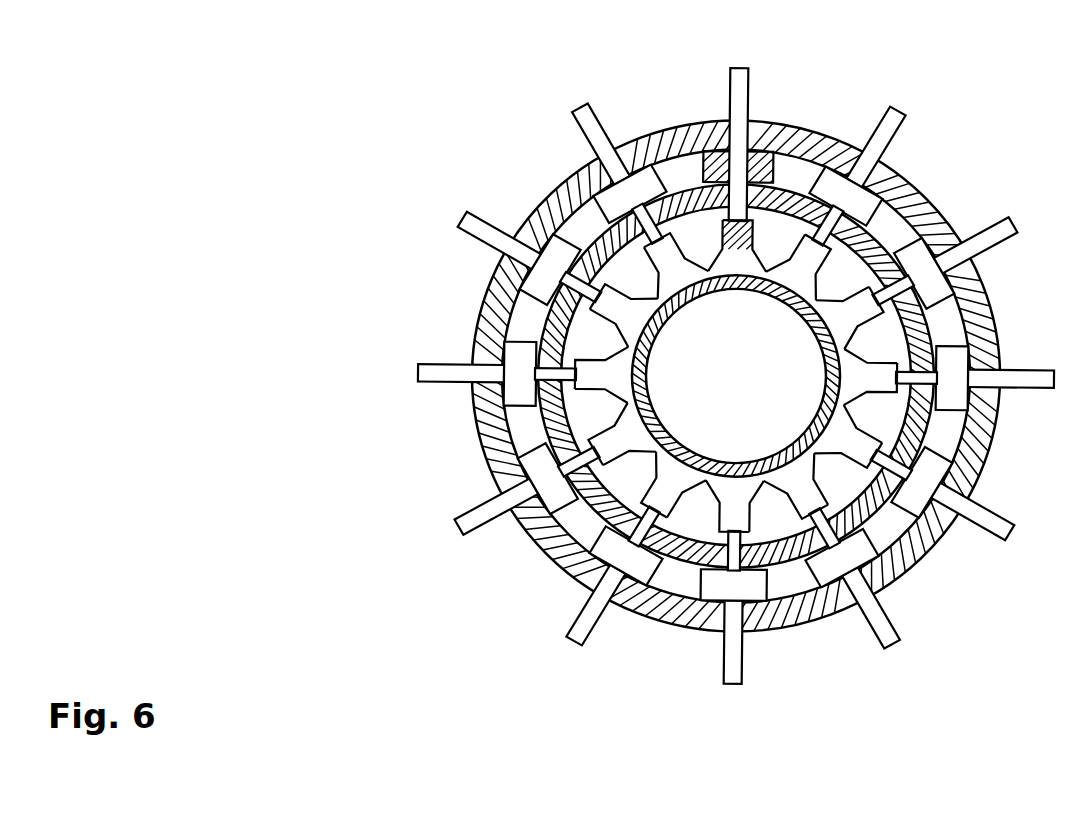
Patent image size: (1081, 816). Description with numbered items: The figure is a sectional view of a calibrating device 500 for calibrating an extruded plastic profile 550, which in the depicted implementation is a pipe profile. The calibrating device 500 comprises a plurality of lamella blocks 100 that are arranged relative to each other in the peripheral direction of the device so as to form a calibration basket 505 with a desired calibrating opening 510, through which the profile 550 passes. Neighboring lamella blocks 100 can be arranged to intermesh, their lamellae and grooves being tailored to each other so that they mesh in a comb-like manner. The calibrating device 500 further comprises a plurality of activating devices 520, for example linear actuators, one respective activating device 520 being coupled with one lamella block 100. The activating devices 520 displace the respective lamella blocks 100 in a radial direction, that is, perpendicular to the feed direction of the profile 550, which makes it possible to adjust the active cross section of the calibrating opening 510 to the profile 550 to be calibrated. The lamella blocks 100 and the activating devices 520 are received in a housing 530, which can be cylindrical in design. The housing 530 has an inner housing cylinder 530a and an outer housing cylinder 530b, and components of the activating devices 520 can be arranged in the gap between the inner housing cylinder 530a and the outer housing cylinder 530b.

The lamella block 100 is at (752, 265).
The calibrating device 500 is at (761, 781).
The calibration basket 505 is at (640, 458).
The calibrating opening 510 is at (761, 373).
The activating device 520 is at (700, 158).
The housing 530 is at (676, 376).
The inner housing cylinder 530a is at (548, 318).
The outer housing cylinder 530b is at (475, 408).
The extruded plastic profile 550 is at (648, 400).